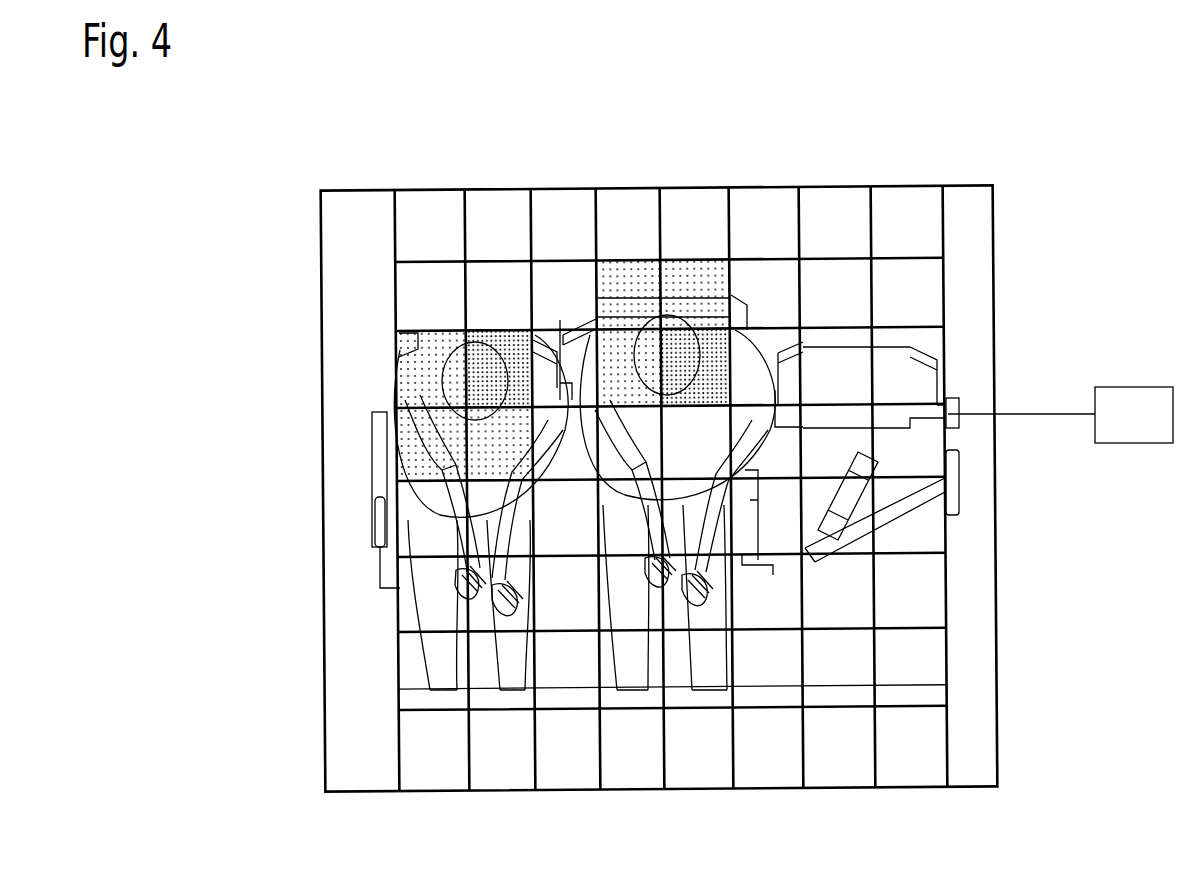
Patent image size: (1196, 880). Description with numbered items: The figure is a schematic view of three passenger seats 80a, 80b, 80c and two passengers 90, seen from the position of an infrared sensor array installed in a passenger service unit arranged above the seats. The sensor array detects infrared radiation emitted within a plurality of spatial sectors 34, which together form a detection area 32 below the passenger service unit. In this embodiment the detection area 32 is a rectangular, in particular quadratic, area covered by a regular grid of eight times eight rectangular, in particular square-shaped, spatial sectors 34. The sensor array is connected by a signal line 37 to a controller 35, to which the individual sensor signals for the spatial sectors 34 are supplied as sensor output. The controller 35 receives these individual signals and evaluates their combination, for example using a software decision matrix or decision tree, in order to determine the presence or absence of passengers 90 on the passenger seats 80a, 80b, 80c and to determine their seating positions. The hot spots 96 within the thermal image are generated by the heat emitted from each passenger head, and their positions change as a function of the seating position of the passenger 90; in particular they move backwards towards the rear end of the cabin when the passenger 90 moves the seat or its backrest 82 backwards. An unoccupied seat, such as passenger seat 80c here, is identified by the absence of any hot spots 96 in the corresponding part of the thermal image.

The detection area 32 is at (957, 220).
The spatial sectors 34 is at (426, 200).
The controller 35 is at (1133, 387).
The signal line 37 is at (1045, 416).
The backrest 82 is at (545, 332).
The passenger seat 80a is at (957, 363).
The passenger seat 80b is at (753, 578).
The passenger seat 80c is at (387, 598).
The passengers 90 is at (500, 694).
The hot spots 96 is at (500, 340).